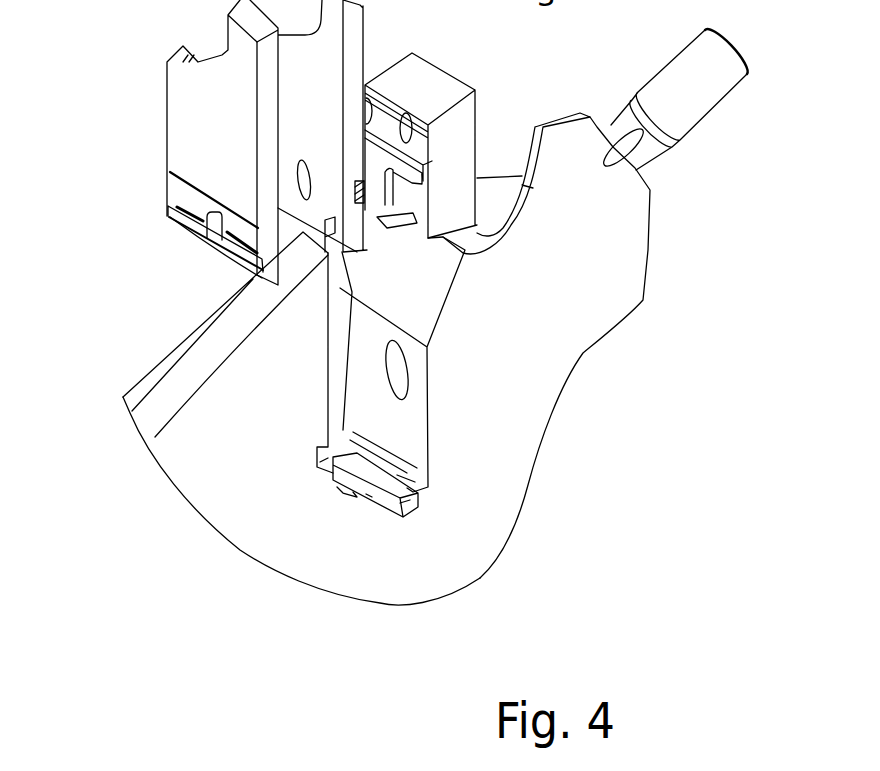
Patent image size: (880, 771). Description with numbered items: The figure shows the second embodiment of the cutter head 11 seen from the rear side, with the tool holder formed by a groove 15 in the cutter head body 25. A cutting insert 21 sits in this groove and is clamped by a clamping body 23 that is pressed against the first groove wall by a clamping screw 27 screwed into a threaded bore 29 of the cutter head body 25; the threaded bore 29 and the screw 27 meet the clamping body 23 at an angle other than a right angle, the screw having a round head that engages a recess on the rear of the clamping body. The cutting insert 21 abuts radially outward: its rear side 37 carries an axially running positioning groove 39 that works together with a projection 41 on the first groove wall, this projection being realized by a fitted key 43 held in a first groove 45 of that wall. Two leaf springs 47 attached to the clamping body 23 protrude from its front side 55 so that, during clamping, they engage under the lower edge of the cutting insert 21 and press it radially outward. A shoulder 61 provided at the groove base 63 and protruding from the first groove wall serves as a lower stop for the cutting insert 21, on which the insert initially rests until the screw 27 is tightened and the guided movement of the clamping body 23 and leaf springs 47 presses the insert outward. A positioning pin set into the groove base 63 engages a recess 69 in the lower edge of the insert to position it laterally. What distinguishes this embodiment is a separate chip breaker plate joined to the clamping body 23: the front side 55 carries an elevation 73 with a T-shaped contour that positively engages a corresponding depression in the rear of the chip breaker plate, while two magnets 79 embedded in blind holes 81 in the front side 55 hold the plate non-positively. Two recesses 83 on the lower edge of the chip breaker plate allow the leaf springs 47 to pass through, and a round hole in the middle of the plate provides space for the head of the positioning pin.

The cutter head 11 is at (365, 33).
The groove 15 is at (470, 523).
The cutting insert 21 is at (167, 100).
The clamping body 23 is at (447, 87).
The cutter head body 25 is at (433, 448).
The clamping screw 27 is at (718, 72).
The threaded bore 29 is at (400, 370).
The rear side 37 is at (188, 147).
The positioning groove 39 is at (170, 193).
The projection 41 is at (410, 500).
The fitted key 43 is at (372, 495).
The first groove 45 is at (330, 463).
The leaf springs 47 is at (393, 230).
The front side 55 is at (410, 201).
The shoulder 61 is at (357, 492).
The groove base 63 is at (427, 487).
The recess 69 is at (200, 247).
The elevation 73 is at (428, 155).
The magnets 79 is at (428, 128).
The blind holes 81 is at (400, 103).
The recesses 83 is at (253, 270).